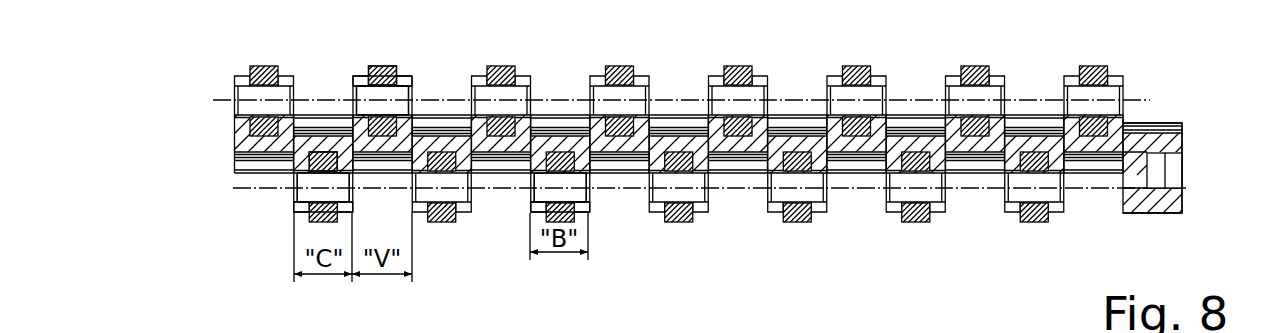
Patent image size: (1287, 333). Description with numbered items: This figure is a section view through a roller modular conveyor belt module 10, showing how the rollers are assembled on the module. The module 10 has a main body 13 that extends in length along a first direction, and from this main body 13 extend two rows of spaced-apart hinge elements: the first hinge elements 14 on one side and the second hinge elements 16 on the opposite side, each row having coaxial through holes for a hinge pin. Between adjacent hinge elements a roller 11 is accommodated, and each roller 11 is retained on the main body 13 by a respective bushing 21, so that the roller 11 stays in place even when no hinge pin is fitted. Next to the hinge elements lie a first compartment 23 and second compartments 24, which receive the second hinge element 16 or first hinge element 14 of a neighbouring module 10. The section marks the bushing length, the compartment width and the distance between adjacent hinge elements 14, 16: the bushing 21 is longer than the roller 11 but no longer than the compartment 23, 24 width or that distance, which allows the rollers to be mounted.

The modular conveyor belt module 10 is at (1197, 125).
The roller 11 is at (382, 67).
The main body 13 is at (224, 136).
The first hinge element 14 is at (343, 208).
The second hinge element 16 is at (359, 79).
The bushing 21 is at (368, 97).
The first compartment 23 is at (403, 219).
The second compartment 24 is at (453, 97).